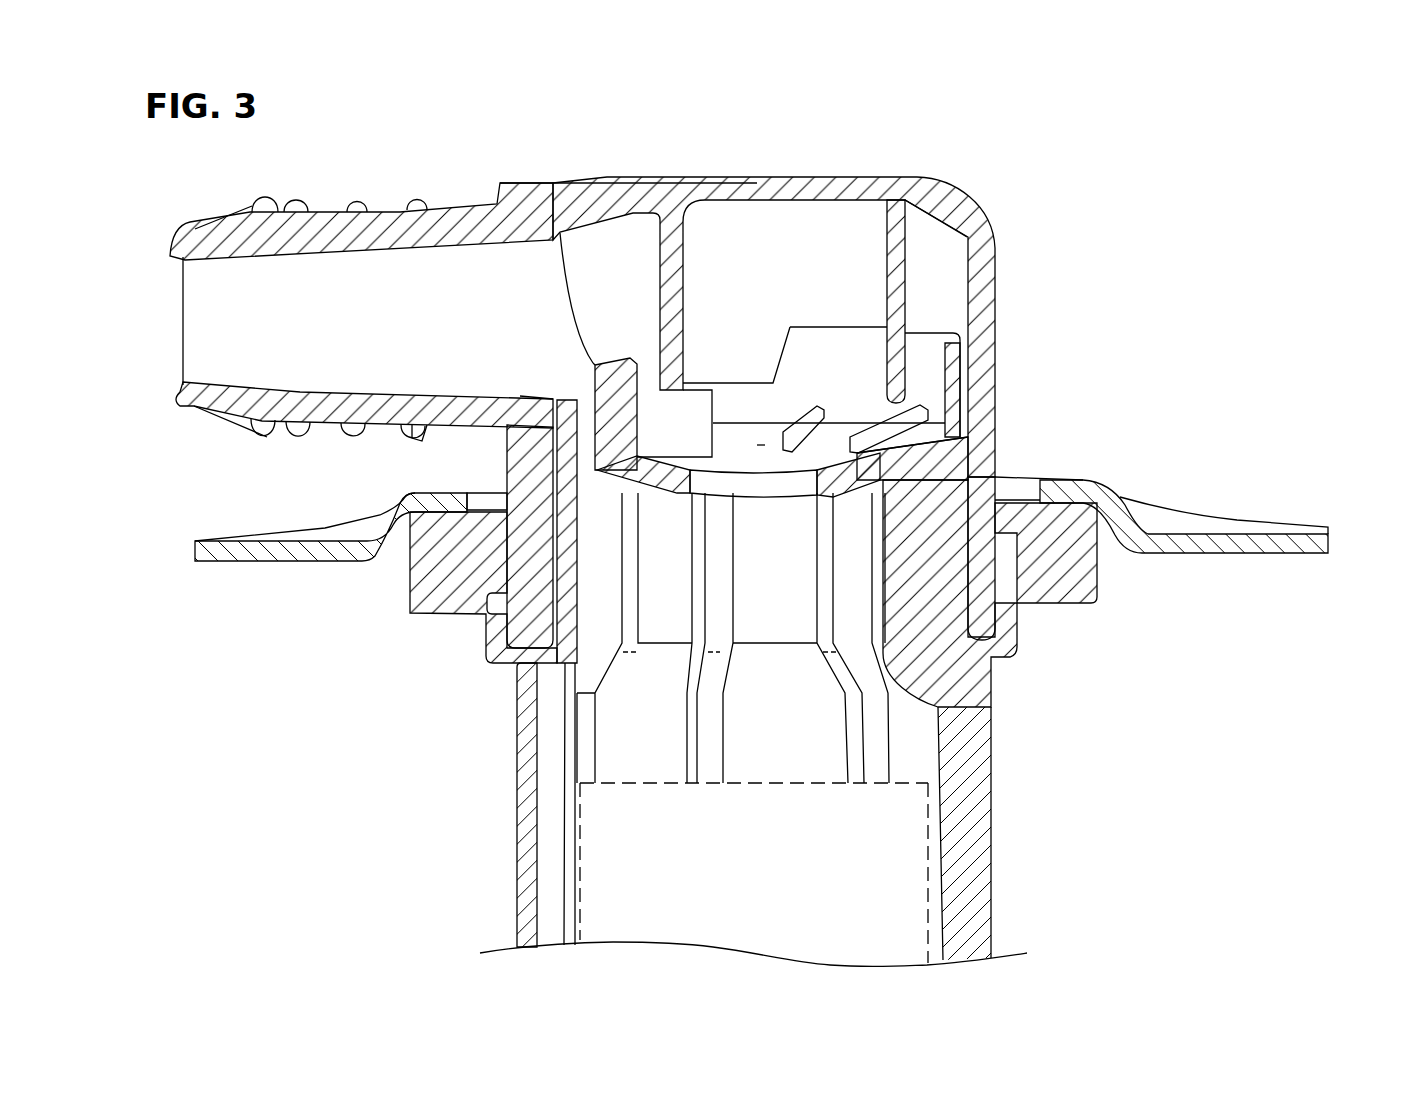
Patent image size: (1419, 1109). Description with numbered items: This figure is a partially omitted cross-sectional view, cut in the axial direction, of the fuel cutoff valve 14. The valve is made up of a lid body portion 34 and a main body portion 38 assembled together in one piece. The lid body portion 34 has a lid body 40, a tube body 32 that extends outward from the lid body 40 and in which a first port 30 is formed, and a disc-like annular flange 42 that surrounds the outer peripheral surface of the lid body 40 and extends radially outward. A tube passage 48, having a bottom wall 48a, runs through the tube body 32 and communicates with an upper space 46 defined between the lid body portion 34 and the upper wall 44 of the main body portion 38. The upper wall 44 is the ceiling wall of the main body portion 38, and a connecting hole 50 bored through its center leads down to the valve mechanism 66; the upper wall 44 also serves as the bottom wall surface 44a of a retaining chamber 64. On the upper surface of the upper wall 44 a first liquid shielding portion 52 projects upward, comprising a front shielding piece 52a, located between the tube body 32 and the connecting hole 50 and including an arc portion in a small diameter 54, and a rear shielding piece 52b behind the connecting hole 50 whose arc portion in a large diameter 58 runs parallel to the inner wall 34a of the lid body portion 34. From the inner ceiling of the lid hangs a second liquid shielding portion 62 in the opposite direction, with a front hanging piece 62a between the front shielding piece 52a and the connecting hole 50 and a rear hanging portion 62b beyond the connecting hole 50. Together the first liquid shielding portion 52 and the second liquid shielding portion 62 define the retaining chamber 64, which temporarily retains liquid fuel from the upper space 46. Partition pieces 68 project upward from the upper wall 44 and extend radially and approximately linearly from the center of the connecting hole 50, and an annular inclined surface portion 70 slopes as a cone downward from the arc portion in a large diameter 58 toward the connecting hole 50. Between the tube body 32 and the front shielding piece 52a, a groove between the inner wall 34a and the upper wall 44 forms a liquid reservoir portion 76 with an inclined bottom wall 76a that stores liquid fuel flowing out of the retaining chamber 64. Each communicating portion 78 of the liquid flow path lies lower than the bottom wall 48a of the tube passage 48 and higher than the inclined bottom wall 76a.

The fuel cutoff valve 14 is at (1040, 180).
The first port 30 is at (183, 378).
The tube body 32 is at (327, 212).
The lid body portion 34 is at (1012, 371).
The inner wall of the lid body portion 34a is at (510, 442).
The main body portion 38 is at (1008, 887).
The lid body 40 is at (997, 323).
The annular flange 42 is at (1330, 540).
The upper wall 44 is at (925, 452).
The bottom wall surface 44a is at (950, 438).
The upper space 46 is at (818, 276).
The tube passage 48 is at (378, 341).
The bottom wall of the tube passage 48a is at (527, 397).
The connecting hole 50 is at (800, 477).
The first liquid shielding portion 52 is at (655, 380).
The front shielding piece 52a is at (600, 365).
The rear shielding piece 52b is at (952, 400).
The arc portion in a small diameter 54 is at (627, 346).
The arc portion in a large diameter 58 is at (895, 300).
The second liquid shielding portion 62 is at (762, 278).
The front hanging piece 62a is at (727, 310).
The rear hanging portion 62b is at (945, 300).
The retaining chamber 64 is at (830, 384).
The valve mechanism 66 is at (735, 896).
The partition pieces 68 is at (893, 420).
The annular inclined surface portion 70 is at (760, 445).
The liquid reservoir portion 76 is at (540, 426).
The inclined bottom wall 76a is at (513, 467).
The communicating portion 78 is at (593, 385).